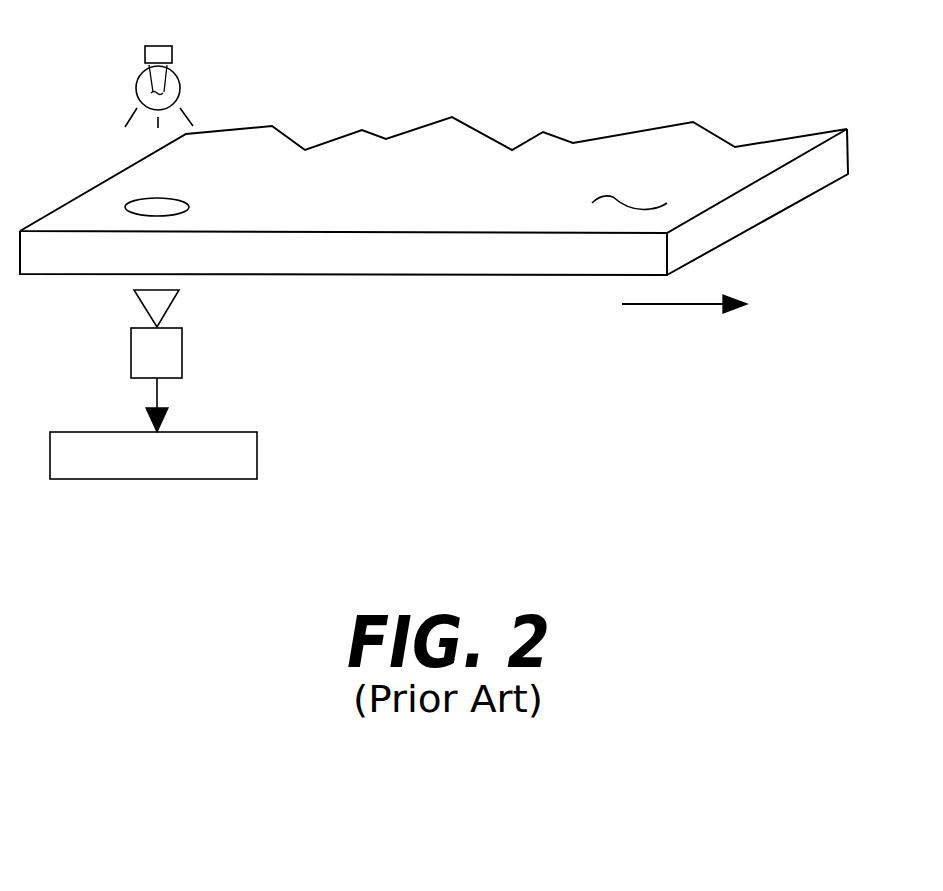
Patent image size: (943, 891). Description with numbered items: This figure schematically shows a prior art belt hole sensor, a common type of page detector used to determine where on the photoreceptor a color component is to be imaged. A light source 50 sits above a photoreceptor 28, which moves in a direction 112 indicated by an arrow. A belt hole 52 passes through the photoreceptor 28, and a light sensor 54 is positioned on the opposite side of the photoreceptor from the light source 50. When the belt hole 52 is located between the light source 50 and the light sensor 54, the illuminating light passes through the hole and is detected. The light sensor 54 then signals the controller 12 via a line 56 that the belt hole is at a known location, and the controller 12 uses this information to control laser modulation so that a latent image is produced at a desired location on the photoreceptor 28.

The controller 12 is at (257, 457).
The photoreceptor 28 is at (635, 200).
The light source 50 is at (172, 52).
The belt hole 52 is at (189, 207).
The light sensor 54 is at (182, 333).
The line 56 is at (157, 397).
The direction 112 is at (665, 304).